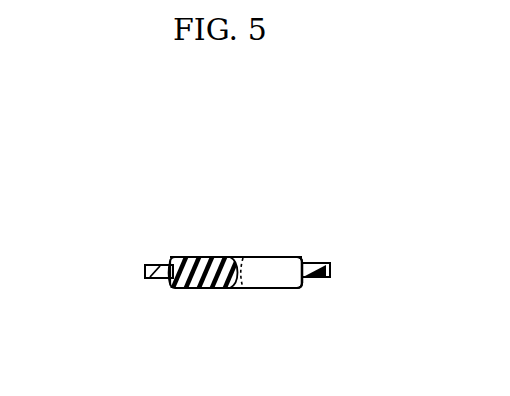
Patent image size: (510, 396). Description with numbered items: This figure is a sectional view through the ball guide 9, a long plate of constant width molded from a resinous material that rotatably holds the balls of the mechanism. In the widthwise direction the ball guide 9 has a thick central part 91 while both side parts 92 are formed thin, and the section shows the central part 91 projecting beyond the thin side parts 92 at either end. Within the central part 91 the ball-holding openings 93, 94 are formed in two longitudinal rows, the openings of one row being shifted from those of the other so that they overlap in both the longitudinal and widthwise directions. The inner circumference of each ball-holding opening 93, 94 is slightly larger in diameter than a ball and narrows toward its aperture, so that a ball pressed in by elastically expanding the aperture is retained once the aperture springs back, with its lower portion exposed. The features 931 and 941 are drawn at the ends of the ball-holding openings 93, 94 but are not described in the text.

The ball guide 9 is at (210, 288).
The central part 91 is at (217, 257).
The side parts 92 is at (150, 262).
The ball-holding opening 93 is at (248, 257).
The sleeve end 931 is at (305, 257).
The ball-holding opening 94 is at (165, 272).
The knurled portion edge 941 is at (175, 258).